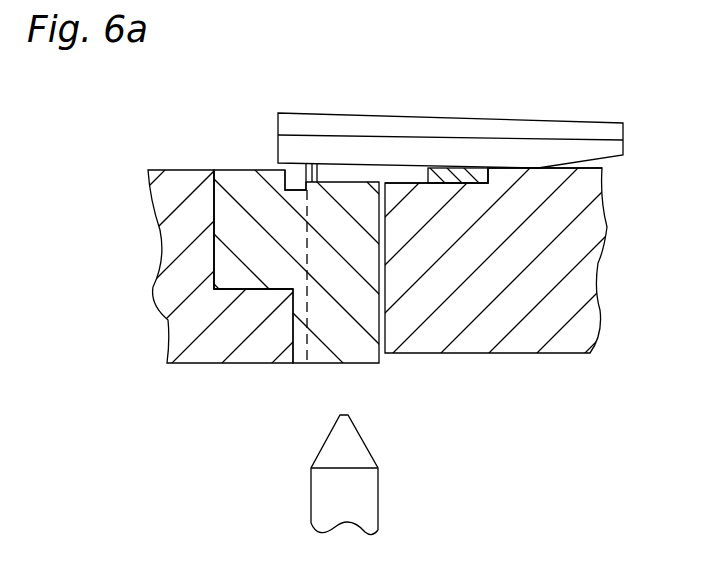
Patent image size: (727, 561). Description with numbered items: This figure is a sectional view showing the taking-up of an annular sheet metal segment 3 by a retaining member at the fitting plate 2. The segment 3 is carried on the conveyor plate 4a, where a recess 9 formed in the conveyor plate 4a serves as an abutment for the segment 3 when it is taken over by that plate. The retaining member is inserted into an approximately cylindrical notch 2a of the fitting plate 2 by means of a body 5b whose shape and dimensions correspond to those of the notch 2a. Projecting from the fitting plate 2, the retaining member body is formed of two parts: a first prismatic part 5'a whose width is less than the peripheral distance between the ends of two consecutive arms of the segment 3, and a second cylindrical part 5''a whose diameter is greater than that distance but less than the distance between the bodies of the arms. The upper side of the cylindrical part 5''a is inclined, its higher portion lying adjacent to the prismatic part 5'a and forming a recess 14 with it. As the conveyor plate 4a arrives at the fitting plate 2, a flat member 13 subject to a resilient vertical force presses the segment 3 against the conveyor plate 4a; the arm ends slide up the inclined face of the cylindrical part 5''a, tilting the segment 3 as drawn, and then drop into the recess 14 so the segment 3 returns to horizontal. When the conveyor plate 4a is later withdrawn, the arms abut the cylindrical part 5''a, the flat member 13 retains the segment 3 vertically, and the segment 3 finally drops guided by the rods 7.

The fitting plate 2 is at (185, 327).
The notch 2a is at (214, 250).
The body 5b is at (240, 192).
The first prismatic part 5'a is at (317, 280).
The second cylindrical part 5''a is at (342, 280).
The recess 14 is at (298, 182).
The conveyor plate 4a is at (528, 330).
The recess 9 is at (490, 180).
The annular sheet metal segment 3 is at (452, 175).
The flat member 13 is at (572, 133).
The rods 7 is at (362, 502).